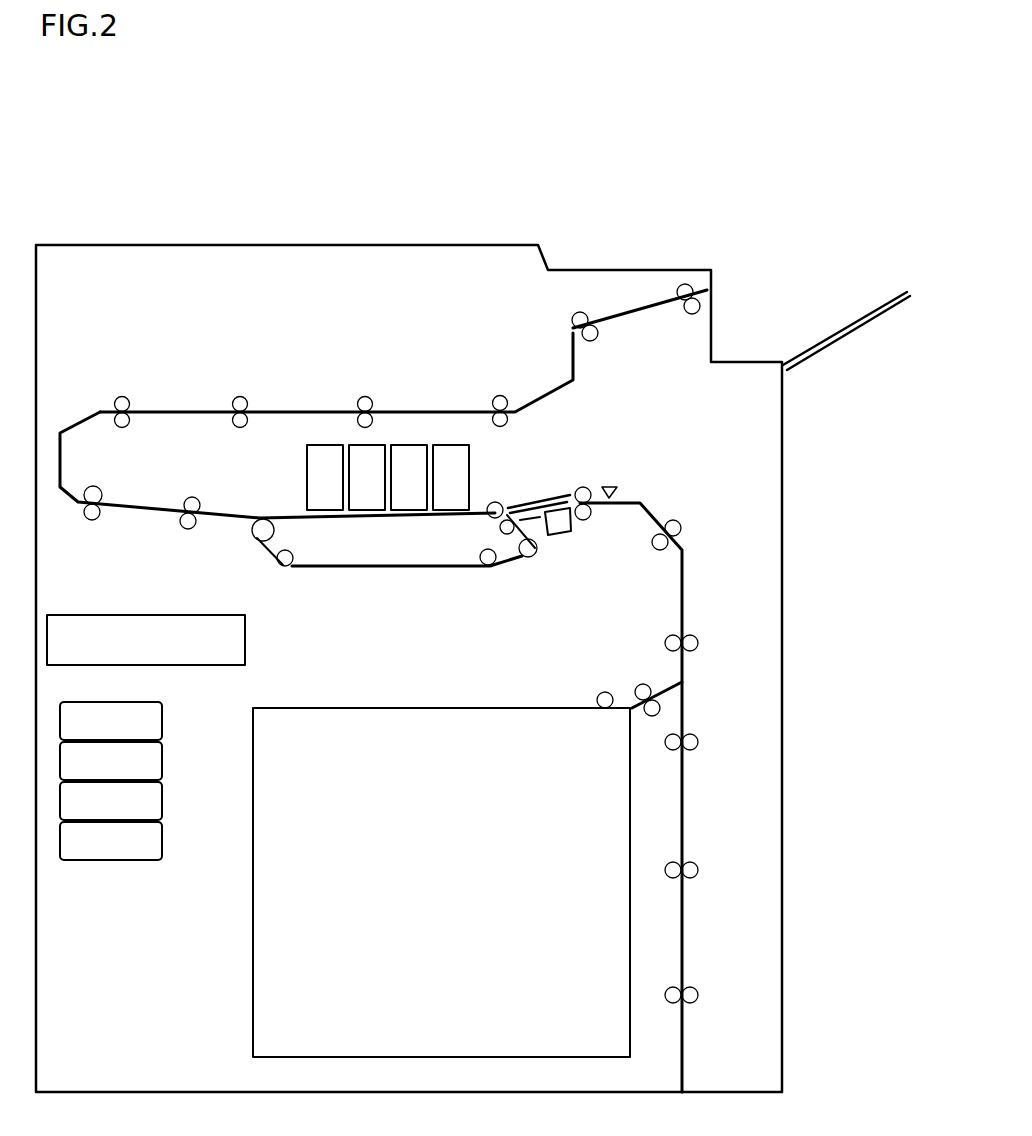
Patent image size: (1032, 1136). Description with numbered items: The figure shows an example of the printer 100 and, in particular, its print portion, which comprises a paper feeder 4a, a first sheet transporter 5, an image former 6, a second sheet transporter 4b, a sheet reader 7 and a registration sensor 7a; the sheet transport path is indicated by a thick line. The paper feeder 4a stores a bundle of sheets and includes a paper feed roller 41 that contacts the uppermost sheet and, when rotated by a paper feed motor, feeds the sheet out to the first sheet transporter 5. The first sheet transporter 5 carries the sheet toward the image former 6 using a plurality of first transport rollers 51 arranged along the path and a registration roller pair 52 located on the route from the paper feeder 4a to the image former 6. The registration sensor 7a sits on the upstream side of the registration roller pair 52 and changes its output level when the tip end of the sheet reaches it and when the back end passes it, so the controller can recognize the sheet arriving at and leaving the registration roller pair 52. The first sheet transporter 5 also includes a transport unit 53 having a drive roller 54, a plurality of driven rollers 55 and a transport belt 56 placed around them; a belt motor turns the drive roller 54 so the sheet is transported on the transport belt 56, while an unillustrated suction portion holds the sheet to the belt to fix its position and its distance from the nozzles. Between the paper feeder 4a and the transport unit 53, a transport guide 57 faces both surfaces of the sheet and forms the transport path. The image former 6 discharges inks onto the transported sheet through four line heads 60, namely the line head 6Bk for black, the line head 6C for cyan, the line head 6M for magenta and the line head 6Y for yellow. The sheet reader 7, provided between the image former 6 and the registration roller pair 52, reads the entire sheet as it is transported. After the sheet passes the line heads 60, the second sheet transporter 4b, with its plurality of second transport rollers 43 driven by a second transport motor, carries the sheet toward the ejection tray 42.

The printer 100 is at (766, 294).
The ejection tray 42 is at (904, 289).
The paper feeder 4a is at (636, 800).
The second sheet transporter 4b is at (82, 410).
The second transport rollers 43 is at (238, 398).
The image former 6 is at (378, 307).
The line heads 60 is at (380, 327).
The line head 6M is at (320, 455).
The line head 6C is at (365, 455).
The line head 6Bk is at (410, 455).
The line head 6Y is at (477, 327).
The transport unit 53 is at (374, 595).
The drive roller 54 is at (530, 560).
The driven rollers 55 is at (280, 560).
The transport belt 56 is at (356, 604).
The transport guide 57 is at (548, 500).
The sheet reader 7 is at (555, 536).
The registration sensor 7a is at (607, 483).
The first sheet transporter 5 is at (664, 789).
The first transport rollers 51 is at (657, 549).
The registration roller pair 52 is at (584, 521).
The paper feed roller 41 is at (606, 691).